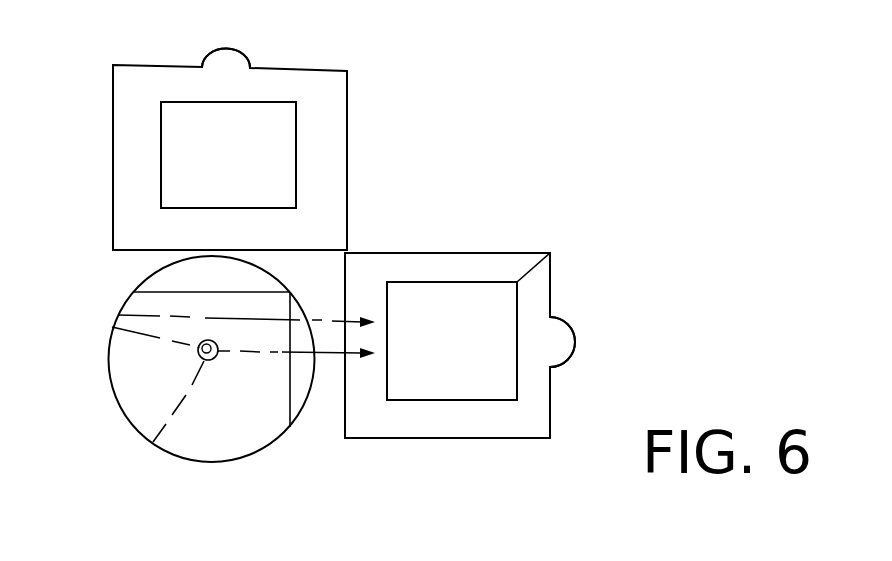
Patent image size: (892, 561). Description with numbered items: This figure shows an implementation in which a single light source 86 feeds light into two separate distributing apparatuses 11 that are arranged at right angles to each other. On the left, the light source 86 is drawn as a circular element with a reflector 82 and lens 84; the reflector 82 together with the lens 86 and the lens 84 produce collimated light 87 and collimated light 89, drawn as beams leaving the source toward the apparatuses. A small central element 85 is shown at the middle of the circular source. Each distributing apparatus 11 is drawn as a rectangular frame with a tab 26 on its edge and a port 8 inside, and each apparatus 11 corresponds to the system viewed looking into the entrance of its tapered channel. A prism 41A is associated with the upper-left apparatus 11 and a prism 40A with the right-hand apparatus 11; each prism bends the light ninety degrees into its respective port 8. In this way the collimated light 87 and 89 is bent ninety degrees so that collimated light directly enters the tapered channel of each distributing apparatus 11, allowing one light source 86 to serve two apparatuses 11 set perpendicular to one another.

The distributing apparatus 11 is at (403, 92).
The tab 26 is at (250, 68).
The port 8 is at (133, 135).
The prism 41A is at (161, 172).
The collimated light 89 is at (148, 226).
The prism 40A is at (517, 283).
The reflector 82 is at (120, 388).
The lens 84 is at (307, 400).
The pivot 85 is at (215, 362).
The light source 86 is at (155, 273).
The collimated light 87 is at (357, 306).